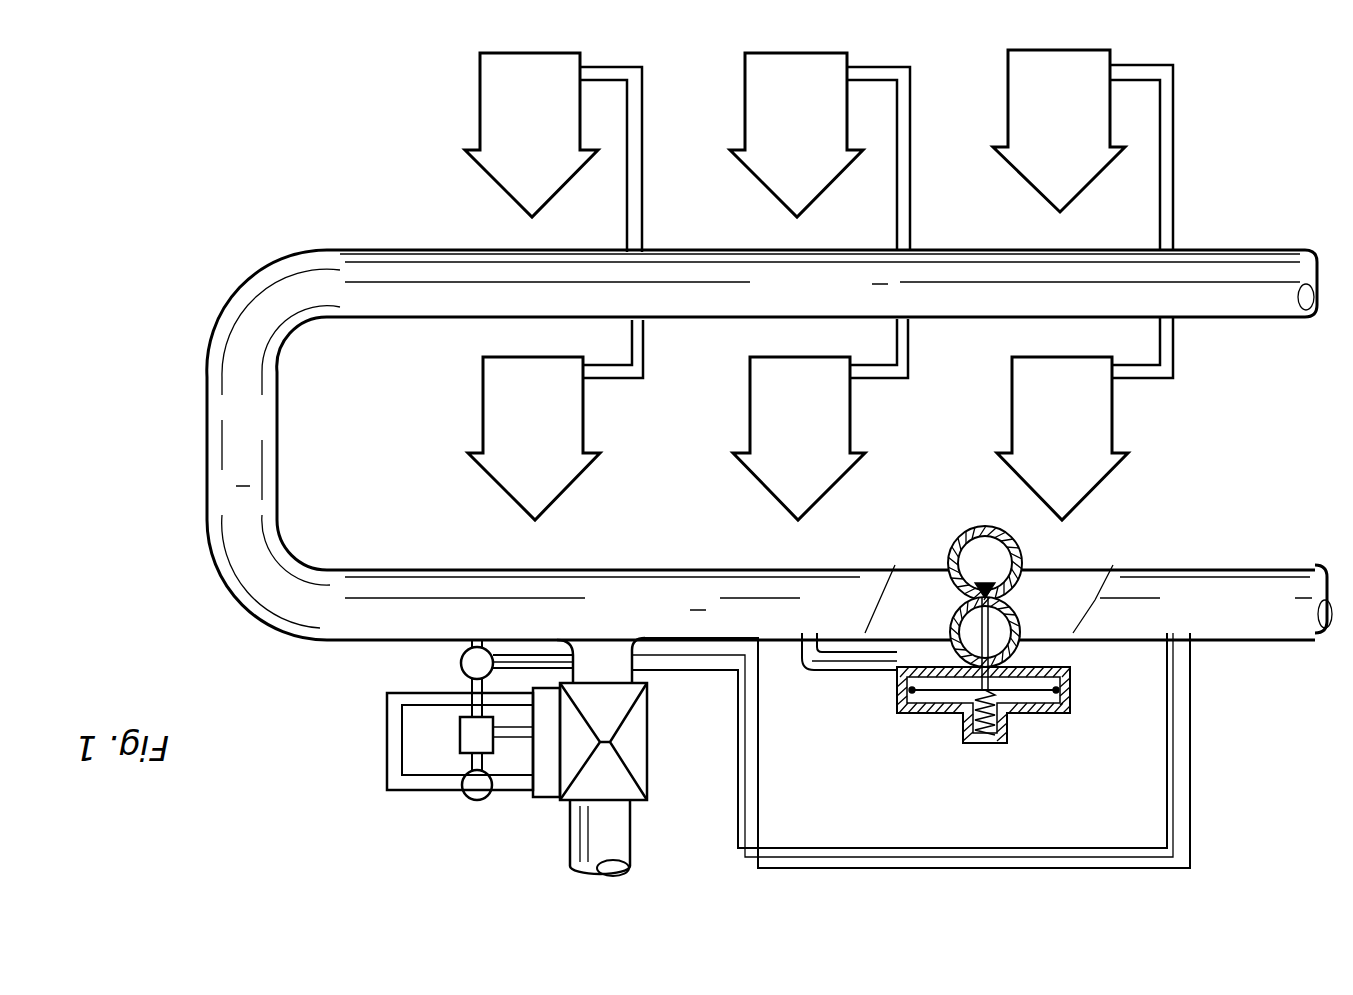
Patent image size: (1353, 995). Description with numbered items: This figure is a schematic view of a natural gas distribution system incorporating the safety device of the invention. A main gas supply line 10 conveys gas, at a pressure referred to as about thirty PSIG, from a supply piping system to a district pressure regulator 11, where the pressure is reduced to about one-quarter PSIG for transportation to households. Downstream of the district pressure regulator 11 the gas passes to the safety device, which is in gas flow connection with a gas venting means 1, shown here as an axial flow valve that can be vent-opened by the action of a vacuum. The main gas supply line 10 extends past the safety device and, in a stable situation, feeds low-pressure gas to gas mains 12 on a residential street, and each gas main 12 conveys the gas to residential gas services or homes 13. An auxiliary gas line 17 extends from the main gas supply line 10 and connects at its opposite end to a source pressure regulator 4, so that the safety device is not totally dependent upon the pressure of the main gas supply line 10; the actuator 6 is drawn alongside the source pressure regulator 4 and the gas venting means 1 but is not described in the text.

The gas venting means 1 is at (645, 777).
The source pressure regulator 4 is at (461, 661).
The valve actuator 6 is at (460, 802).
The main gas supply line 10 is at (340, 625).
The district pressure regulator 11 is at (1058, 700).
The gas mains 12 is at (445, 308).
The residential gas services 13 is at (518, 177).
The auxiliary gas line 17 is at (1180, 780).